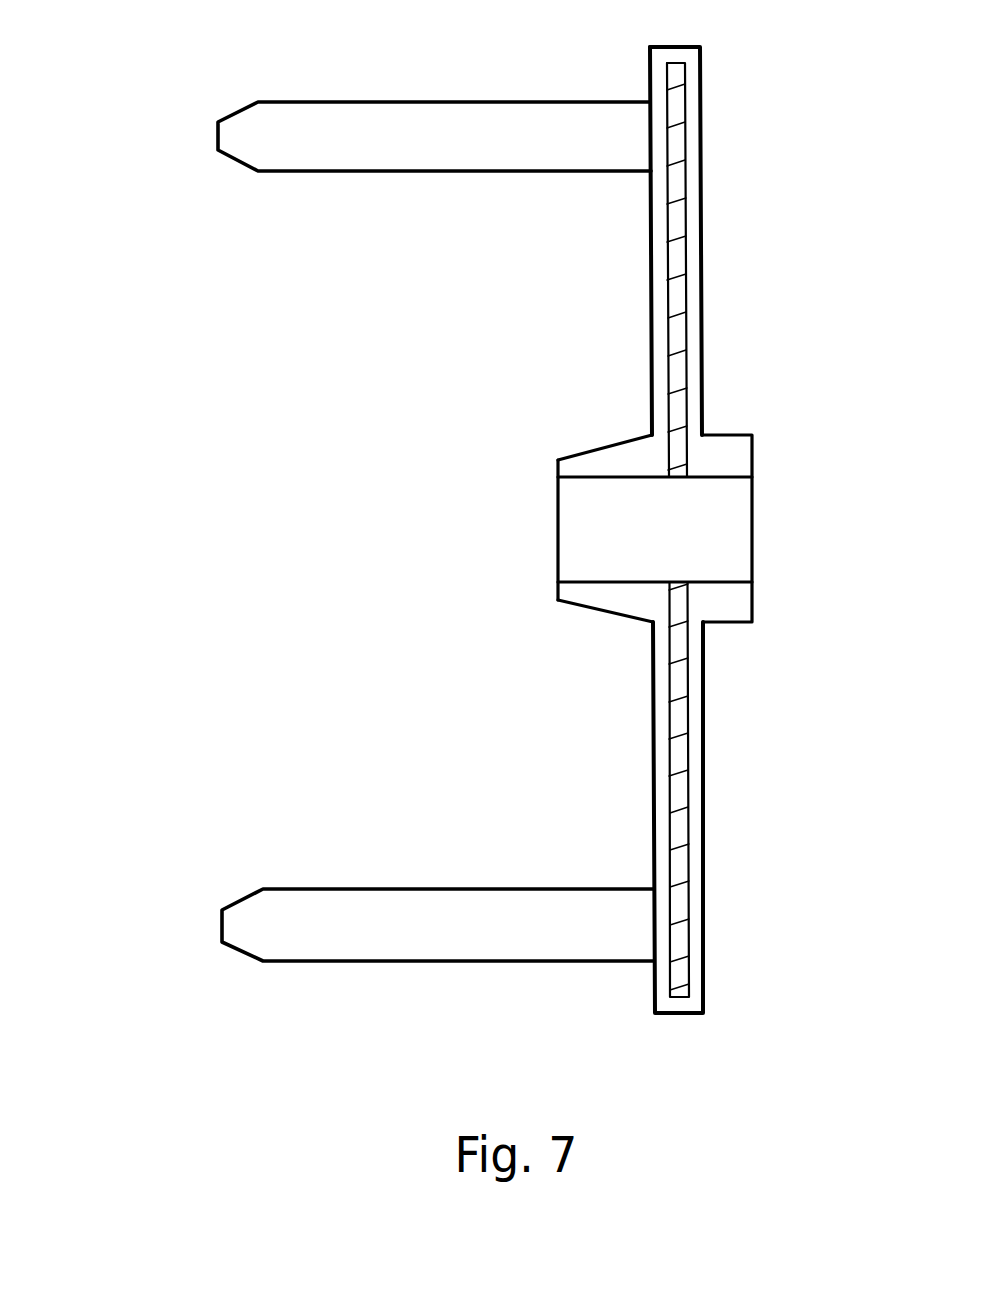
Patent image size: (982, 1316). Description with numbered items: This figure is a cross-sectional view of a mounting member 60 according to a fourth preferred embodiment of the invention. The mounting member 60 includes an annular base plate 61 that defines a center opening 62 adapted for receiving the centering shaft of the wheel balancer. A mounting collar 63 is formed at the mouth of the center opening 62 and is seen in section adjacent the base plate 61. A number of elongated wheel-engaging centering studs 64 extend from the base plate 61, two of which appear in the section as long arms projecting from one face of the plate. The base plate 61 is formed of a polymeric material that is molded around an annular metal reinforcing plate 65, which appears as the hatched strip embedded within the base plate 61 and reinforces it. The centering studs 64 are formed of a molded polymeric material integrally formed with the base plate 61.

The mounting member 60 is at (110, 131).
The annular base plate 61 is at (693, 378).
The center opening 62 is at (718, 478).
The mounting collar 63 is at (612, 598).
The wheel-engaging centering studs 64 is at (393, 148).
The annular metal reinforcing plate 65 is at (678, 838).